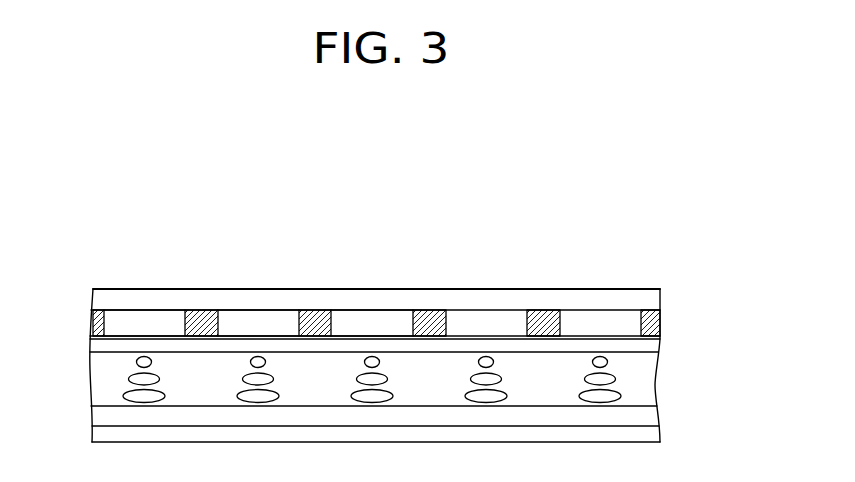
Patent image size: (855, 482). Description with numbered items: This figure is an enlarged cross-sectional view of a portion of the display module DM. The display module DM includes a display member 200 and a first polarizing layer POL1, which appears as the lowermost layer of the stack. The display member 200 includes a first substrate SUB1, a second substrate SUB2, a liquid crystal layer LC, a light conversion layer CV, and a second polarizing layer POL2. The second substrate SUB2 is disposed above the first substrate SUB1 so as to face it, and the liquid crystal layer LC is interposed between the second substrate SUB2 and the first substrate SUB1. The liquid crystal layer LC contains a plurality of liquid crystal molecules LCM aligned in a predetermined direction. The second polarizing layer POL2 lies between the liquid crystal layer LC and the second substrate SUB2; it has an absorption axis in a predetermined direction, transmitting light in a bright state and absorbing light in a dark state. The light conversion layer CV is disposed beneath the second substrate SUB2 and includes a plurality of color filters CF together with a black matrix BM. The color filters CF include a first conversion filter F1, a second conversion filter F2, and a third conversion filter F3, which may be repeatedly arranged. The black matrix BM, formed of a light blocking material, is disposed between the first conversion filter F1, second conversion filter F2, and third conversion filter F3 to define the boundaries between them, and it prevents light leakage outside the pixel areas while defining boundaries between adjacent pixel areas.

The display module DM is at (611, 190).
The display member 200 is at (762, 287).
The second substrate SUB2 is at (648, 296).
The light conversion layer CV is at (668, 323).
The black matrix BM is at (538, 318).
The color filters CF is at (393, 223).
The first conversion filter F1 is at (147, 315).
The second conversion filter F2 is at (257, 315).
The third conversion filter F3 is at (370, 315).
The second polarizing layer POL2 is at (648, 343).
The liquid crystal molecules LCM is at (118, 392).
The liquid crystal layer LC is at (655, 380).
The first substrate SUB1 is at (648, 417).
The first polarizing layer POL1 is at (648, 435).